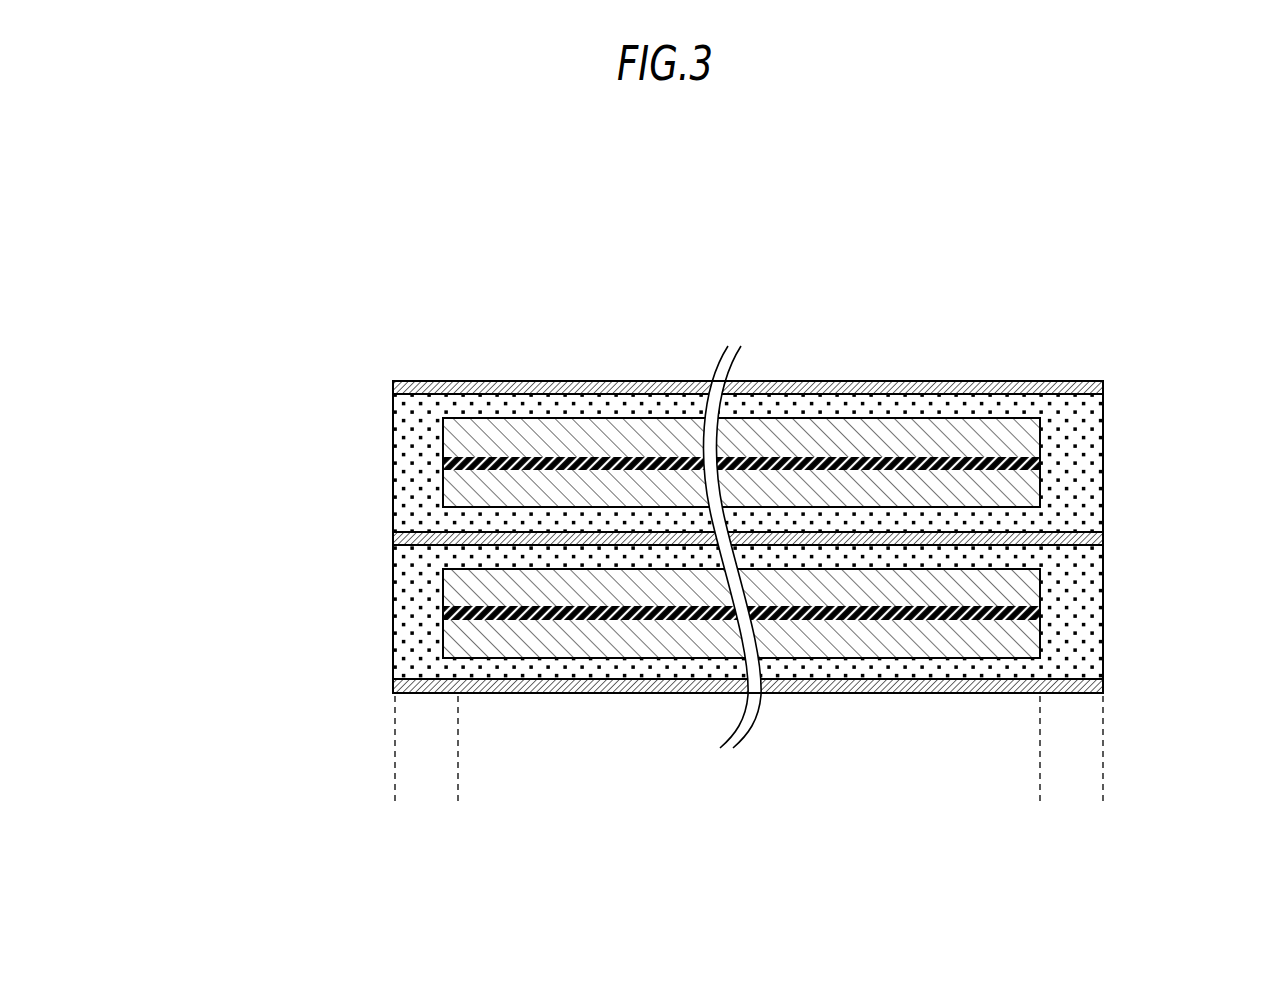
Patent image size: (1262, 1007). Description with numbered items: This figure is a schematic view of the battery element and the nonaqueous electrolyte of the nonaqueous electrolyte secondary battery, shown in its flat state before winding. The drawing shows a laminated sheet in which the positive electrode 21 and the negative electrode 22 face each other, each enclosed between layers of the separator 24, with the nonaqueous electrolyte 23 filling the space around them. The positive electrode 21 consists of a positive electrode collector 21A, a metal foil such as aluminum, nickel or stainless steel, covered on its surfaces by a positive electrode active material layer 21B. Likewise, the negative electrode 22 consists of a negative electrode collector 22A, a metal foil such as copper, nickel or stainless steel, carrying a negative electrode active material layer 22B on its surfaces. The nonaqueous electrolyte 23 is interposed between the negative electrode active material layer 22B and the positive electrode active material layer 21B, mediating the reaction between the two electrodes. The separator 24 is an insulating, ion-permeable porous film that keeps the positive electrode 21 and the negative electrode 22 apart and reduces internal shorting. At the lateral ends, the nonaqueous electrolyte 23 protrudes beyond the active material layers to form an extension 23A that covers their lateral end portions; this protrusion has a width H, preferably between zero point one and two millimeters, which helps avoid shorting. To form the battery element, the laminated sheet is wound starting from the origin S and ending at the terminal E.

The positive electrode 21 is at (658, 692).
The positive electrode collector 21A is at (445, 612).
The positive electrode active material layer 21B is at (1040, 647).
The negative electrode 22 is at (641, 359).
The negative electrode collector 22A is at (445, 458).
The negative electrode active material layer 22B is at (1040, 490).
The nonaqueous electrolyte 23 is at (1055, 583).
The extension 23A is at (1098, 676).
The separator 24 is at (445, 385).
The origin S is at (400, 370).
The terminal E is at (1085, 375).
The extension width H is at (457, 757).